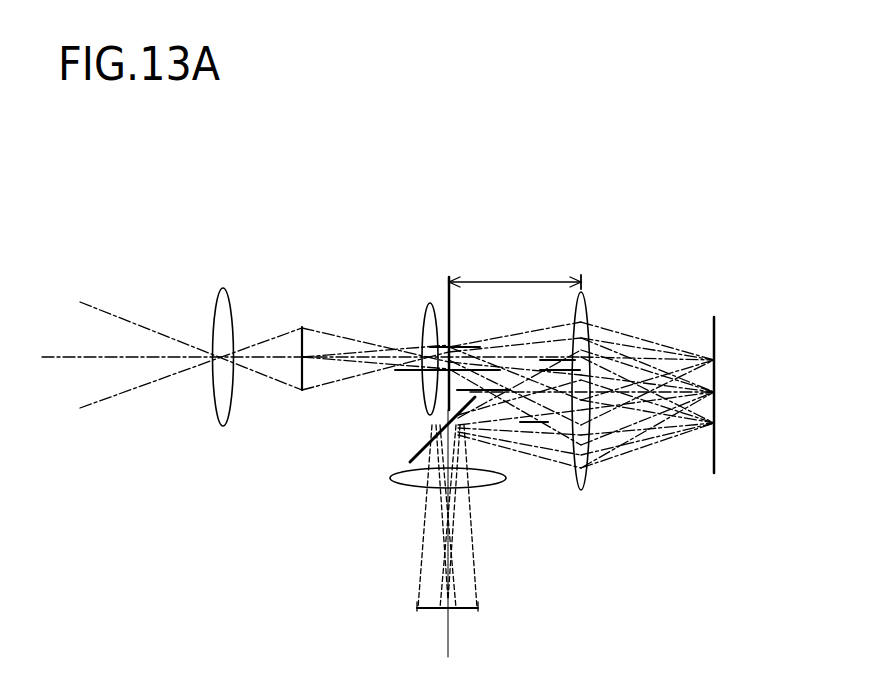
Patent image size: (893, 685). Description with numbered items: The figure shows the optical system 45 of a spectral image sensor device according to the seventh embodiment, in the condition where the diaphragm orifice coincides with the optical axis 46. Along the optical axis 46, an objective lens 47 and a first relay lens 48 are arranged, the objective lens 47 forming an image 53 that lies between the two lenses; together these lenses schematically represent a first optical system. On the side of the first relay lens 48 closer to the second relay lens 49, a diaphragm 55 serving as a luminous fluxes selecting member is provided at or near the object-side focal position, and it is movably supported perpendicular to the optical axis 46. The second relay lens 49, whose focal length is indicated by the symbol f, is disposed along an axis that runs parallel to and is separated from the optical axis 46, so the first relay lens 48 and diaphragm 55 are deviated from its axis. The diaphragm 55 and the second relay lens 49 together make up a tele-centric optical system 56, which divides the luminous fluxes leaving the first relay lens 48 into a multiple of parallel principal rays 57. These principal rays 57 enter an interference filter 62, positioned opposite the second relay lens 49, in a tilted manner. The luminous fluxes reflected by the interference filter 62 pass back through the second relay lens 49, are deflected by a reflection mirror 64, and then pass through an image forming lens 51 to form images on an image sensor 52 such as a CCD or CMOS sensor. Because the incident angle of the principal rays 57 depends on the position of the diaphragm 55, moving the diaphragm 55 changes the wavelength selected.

The optical system 45 is at (292, 198).
The optical axis 46 is at (90, 357).
The objective lens 47 is at (224, 428).
The image 53 is at (303, 374).
The first relay lens 48 is at (423, 397).
The diaphragm 55 is at (449, 292).
The tele-centric optical system 56 is at (493, 253).
The second relay lens 49 is at (590, 307).
The principal rays 57 is at (633, 337).
The interference filter 62 is at (712, 458).
The reflection mirror 64 is at (412, 448).
The image forming lens 51 is at (502, 487).
The image sensor 52 is at (430, 607).